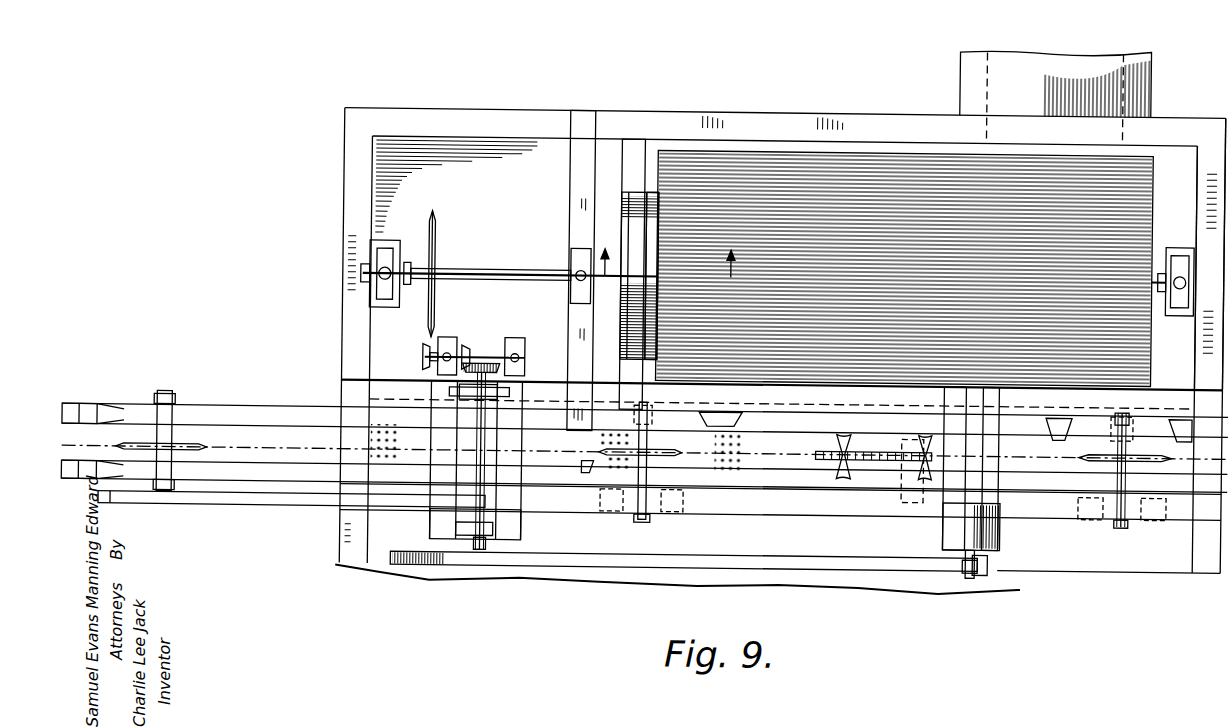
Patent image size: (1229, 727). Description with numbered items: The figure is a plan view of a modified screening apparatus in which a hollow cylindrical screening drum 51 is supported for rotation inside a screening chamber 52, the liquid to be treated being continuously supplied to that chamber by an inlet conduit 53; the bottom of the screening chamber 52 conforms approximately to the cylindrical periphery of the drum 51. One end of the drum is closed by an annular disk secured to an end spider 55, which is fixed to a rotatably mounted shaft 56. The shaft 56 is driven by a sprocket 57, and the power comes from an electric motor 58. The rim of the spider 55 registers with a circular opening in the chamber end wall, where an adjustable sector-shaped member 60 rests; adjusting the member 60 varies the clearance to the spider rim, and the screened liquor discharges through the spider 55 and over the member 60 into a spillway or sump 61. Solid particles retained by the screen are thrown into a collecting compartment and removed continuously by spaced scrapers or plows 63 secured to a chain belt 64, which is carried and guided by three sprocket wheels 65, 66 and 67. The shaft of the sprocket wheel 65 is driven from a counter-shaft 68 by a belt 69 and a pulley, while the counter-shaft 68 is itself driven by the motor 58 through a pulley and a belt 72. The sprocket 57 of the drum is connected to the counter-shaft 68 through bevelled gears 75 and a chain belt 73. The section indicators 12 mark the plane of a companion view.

The section line indicator 12 is at (678, 254).
The hollow cylindrical screening drum 51 is at (965, 160).
The screening chamber 52 is at (1175, 165).
The inlet conduit 53 is at (1040, 80).
The end spider 55 is at (652, 224).
The rotatably mounted shaft 56 is at (480, 270).
The sprocket 57 is at (434, 226).
The electric motor 58 is at (1000, 535).
The adjustable sector-shaped member 60 is at (636, 250).
The spillway or sump 61 is at (396, 193).
The scrapers or plows 63 is at (838, 447).
The chain belt 64 is at (242, 440).
The sprocket wheel 65 is at (182, 445).
The sprocket wheel 66 is at (672, 446).
The sprocket wheel 67 is at (1092, 460).
The counter-shaft 68 is at (505, 490).
The belt 69 is at (295, 510).
The belt 72 is at (786, 566).
The chain belt 73 is at (424, 350).
The bevelled gears 75 is at (468, 358).